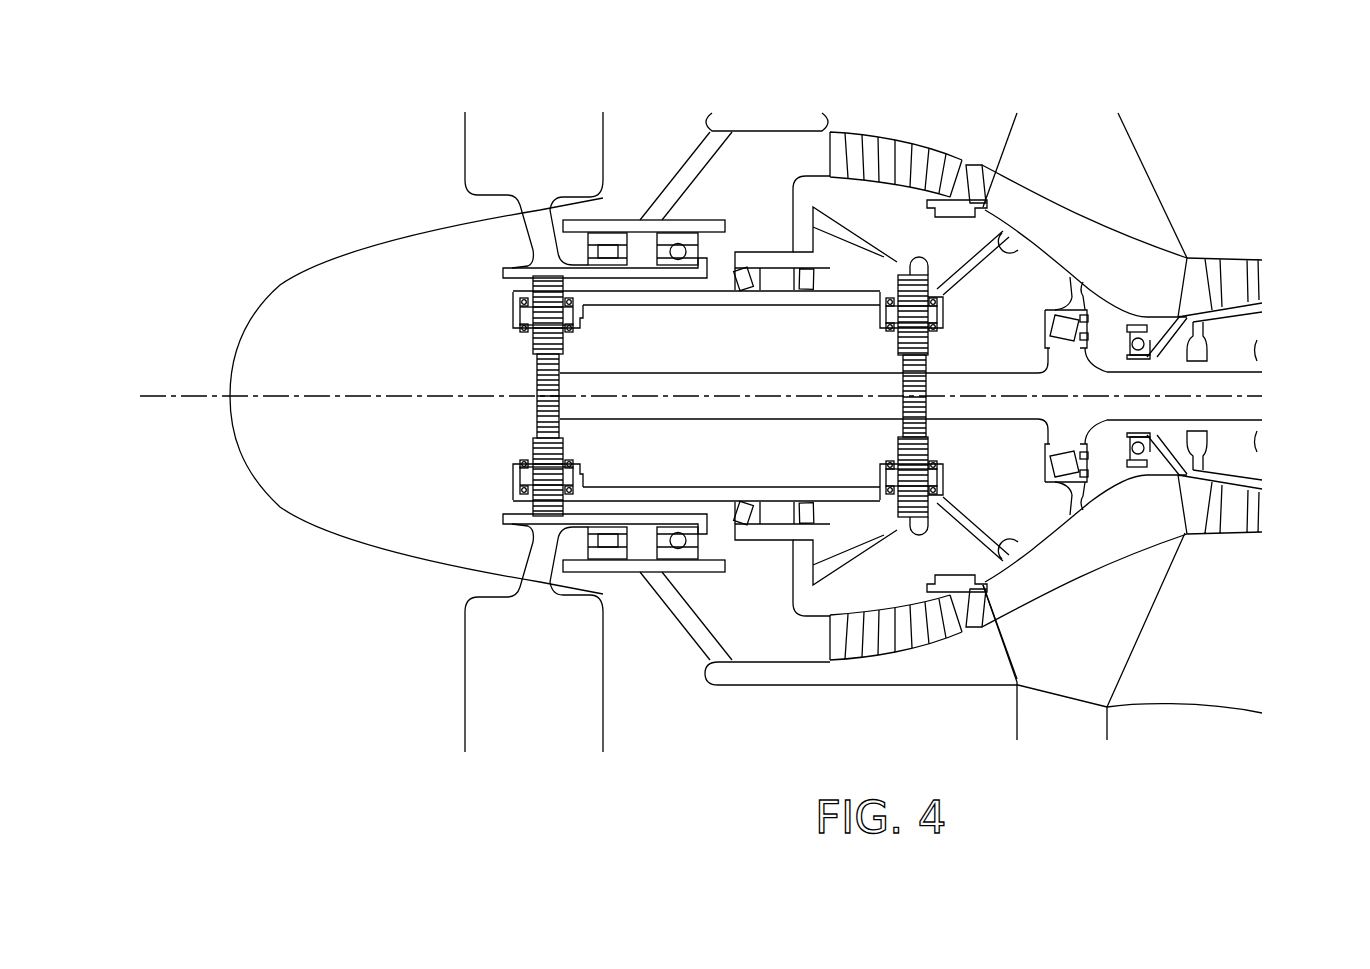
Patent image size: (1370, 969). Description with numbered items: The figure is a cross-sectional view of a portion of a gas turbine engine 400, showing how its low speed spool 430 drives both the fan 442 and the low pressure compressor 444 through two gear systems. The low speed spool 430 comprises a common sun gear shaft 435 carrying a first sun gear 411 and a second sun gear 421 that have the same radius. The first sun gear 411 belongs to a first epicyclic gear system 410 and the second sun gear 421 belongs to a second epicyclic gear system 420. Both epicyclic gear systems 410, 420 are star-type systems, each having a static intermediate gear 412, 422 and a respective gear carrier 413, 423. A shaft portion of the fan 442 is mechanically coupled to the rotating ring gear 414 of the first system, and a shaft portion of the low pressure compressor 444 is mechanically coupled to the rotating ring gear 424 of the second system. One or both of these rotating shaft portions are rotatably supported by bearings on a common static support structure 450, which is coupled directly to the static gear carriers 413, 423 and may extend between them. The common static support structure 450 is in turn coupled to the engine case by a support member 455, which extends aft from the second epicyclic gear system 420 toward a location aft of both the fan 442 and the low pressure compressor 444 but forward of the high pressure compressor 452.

The gas turbine engine 400 is at (270, 146).
The first epicyclic gear system 410 is at (440, 413).
The first sun gear 411 is at (538, 382).
The static intermediate gear 412 is at (552, 335).
The gear carrier 413 is at (517, 310).
The rotating ring gear 414 is at (503, 268).
The second epicyclic gear system 420 is at (960, 345).
The second sun gear 421 is at (907, 380).
The static intermediate gear 422 is at (910, 340).
The gear carrier 423 is at (880, 310).
The rotating ring gear 424 is at (978, 280).
The low speed spool 430 is at (995, 418).
The common sun gear shaft 435 is at (740, 413).
The fan 442 is at (497, 147).
The low pressure compressor 444 is at (815, 148).
The common static support structure 450 is at (747, 297).
The high pressure compressor 452 is at (1238, 212).
The support member 455 is at (1020, 225).